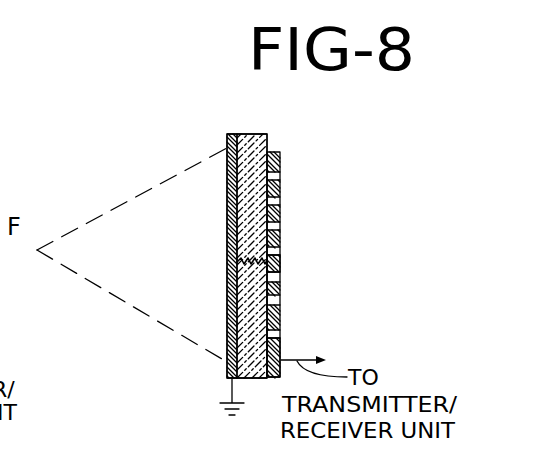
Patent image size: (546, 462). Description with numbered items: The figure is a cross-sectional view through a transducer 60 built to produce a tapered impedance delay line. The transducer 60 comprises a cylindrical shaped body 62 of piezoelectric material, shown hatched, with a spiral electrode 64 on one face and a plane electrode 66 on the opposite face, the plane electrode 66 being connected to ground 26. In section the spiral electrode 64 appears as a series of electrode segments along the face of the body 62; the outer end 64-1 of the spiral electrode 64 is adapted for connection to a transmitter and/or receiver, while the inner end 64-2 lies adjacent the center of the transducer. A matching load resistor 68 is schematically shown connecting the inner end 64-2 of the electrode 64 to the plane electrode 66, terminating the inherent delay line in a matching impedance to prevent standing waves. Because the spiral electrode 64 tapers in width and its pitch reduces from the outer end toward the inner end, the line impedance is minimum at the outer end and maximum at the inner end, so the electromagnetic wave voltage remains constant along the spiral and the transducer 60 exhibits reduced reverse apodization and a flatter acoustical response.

The transducer 60 is at (218, 135).
The cylindrical shaped body 62 is at (261, 134).
The spiral electrode 64 is at (285, 164).
The outer end of the spiral electrode 64-1 is at (283, 348).
The inner end of the spiral electrode 64-2 is at (281, 258).
The plane electrode 66 is at (227, 200).
The matching load resistor 68 is at (232, 272).
The ground 26 is at (221, 403).